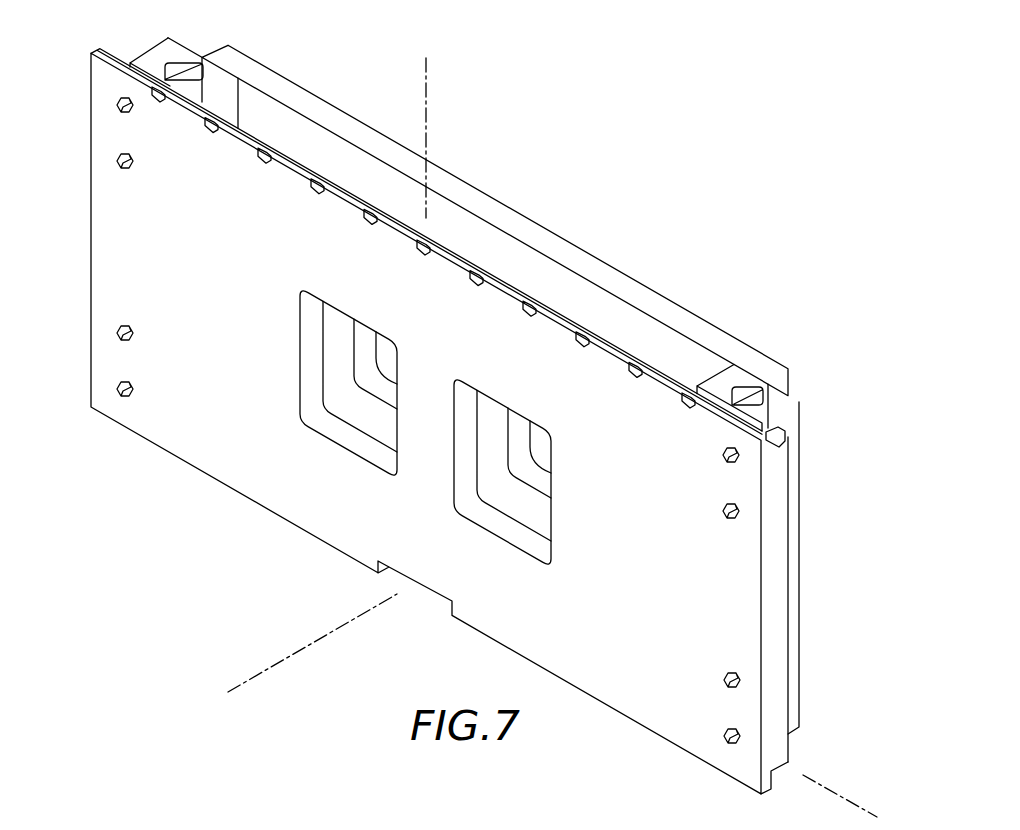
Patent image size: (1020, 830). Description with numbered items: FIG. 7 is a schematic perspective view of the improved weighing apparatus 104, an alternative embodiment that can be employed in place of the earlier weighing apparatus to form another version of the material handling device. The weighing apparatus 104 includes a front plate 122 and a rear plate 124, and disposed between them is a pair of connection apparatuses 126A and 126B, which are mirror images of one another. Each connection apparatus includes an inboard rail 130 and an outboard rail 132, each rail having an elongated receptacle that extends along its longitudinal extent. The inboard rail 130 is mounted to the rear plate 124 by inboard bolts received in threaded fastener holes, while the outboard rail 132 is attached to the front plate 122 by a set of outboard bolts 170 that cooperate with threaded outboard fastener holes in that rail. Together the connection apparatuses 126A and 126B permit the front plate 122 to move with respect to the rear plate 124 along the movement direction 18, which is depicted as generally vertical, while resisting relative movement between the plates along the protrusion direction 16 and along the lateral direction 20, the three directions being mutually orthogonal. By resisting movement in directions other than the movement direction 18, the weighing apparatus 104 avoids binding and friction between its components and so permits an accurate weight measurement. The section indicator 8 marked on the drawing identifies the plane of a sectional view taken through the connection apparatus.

The panel assembly 104 is at (600, 219).
The front plate 122 is at (220, 462).
The back panel 124 is at (300, 88).
The first end bracket 126A is at (150, 47).
The second end bracket 126B is at (793, 421).
The retaining tabs 130 is at (237, 103).
The bracket flange 132 is at (182, 47).
The fasteners 170 is at (116, 161).
The vertical center axis 18 is at (428, 100).
The longitudinal axis 16 is at (330, 642).
The transverse axis 20 is at (836, 786).
The section line 8- 8 is at (682, 520).